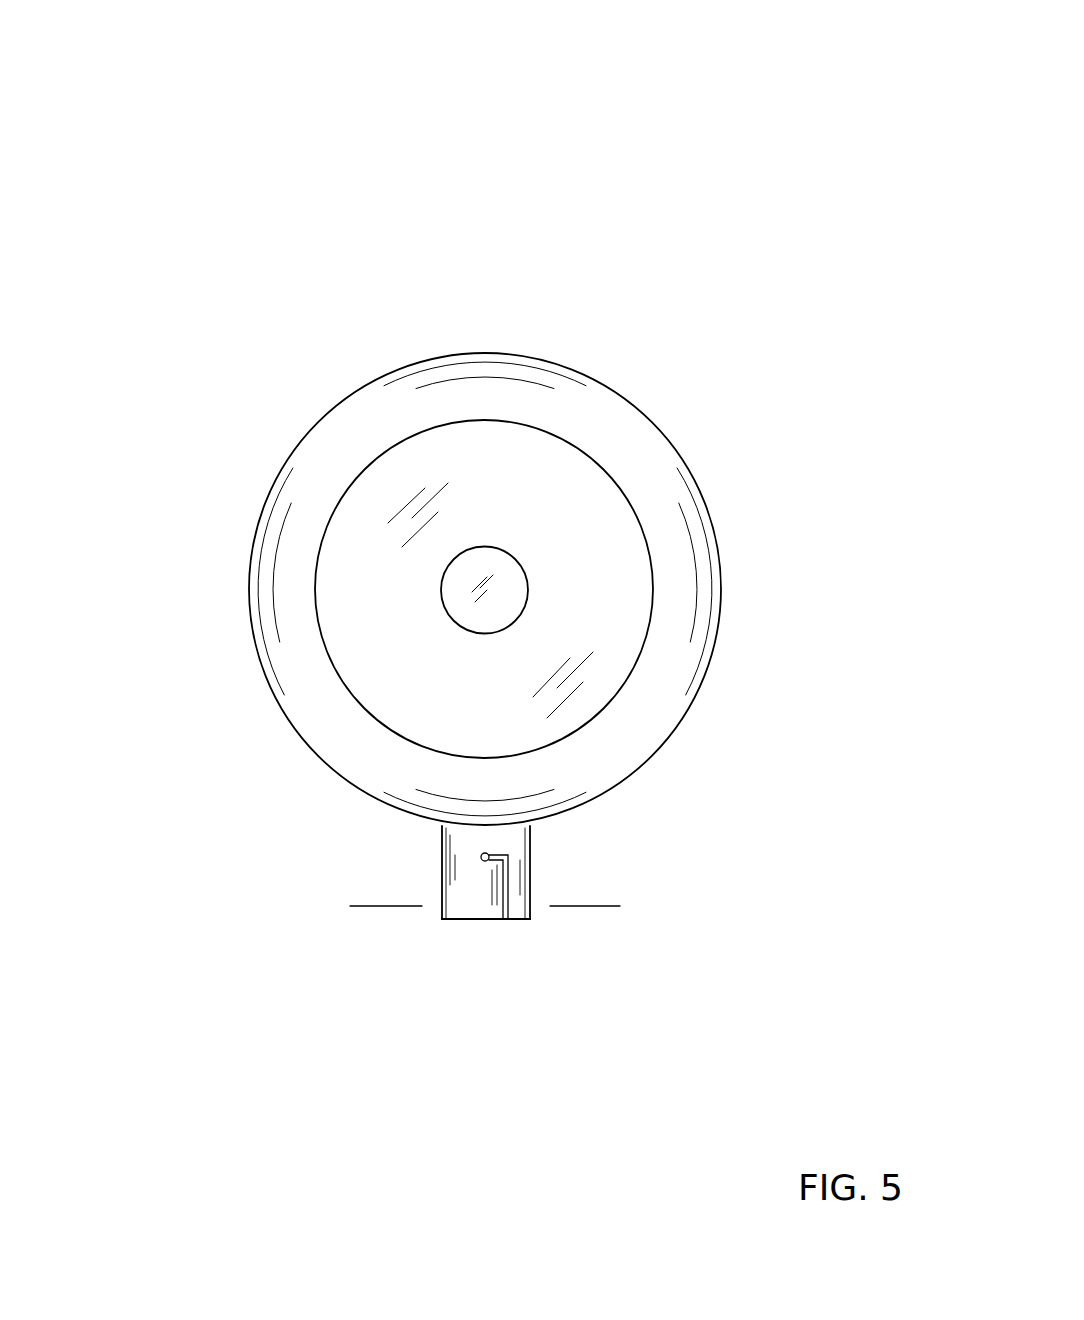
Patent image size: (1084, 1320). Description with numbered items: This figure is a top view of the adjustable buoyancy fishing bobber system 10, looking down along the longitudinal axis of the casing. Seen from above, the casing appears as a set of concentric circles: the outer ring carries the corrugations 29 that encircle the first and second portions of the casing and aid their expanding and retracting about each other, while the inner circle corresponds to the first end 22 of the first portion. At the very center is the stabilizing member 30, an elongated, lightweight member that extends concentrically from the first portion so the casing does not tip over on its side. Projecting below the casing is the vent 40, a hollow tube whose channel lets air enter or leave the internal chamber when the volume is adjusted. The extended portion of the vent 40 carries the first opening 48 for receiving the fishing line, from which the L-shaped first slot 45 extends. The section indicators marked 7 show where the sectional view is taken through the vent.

The adjustable buoyancy fishing bobber system 10 is at (677, 107).
The first end 22 is at (370, 497).
The corrugations 29 is at (312, 723).
The stabilizing member 30 is at (490, 563).
The vent 40 is at (530, 858).
The first slot 45 is at (503, 920).
The first opening 48 is at (481, 857).
The section line 7- 7 is at (587, 916).